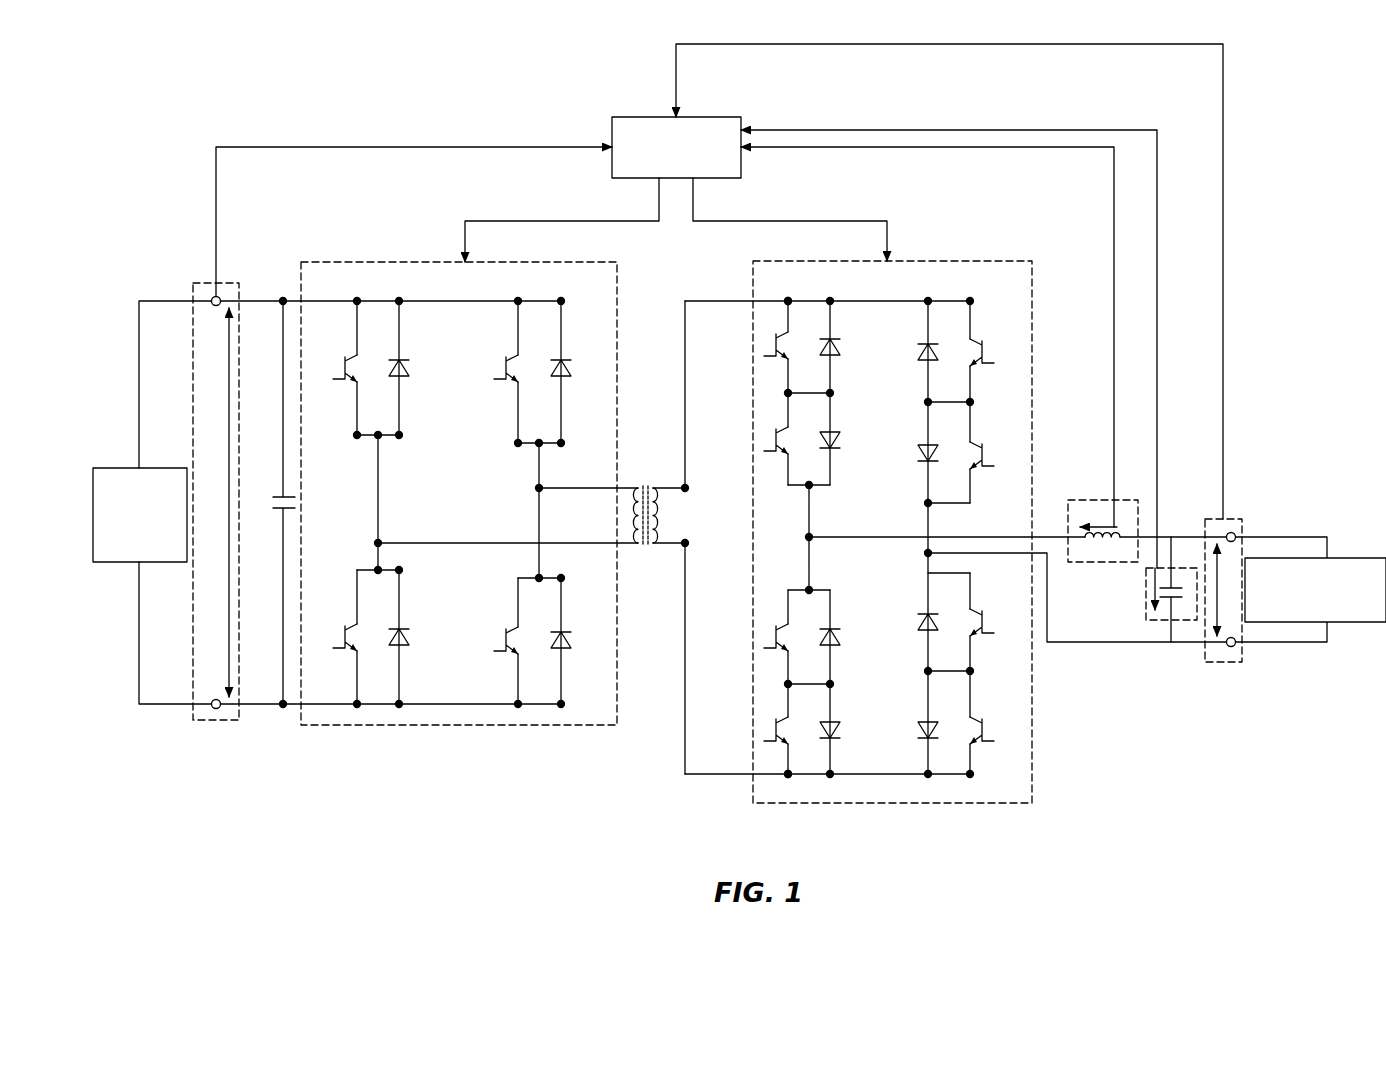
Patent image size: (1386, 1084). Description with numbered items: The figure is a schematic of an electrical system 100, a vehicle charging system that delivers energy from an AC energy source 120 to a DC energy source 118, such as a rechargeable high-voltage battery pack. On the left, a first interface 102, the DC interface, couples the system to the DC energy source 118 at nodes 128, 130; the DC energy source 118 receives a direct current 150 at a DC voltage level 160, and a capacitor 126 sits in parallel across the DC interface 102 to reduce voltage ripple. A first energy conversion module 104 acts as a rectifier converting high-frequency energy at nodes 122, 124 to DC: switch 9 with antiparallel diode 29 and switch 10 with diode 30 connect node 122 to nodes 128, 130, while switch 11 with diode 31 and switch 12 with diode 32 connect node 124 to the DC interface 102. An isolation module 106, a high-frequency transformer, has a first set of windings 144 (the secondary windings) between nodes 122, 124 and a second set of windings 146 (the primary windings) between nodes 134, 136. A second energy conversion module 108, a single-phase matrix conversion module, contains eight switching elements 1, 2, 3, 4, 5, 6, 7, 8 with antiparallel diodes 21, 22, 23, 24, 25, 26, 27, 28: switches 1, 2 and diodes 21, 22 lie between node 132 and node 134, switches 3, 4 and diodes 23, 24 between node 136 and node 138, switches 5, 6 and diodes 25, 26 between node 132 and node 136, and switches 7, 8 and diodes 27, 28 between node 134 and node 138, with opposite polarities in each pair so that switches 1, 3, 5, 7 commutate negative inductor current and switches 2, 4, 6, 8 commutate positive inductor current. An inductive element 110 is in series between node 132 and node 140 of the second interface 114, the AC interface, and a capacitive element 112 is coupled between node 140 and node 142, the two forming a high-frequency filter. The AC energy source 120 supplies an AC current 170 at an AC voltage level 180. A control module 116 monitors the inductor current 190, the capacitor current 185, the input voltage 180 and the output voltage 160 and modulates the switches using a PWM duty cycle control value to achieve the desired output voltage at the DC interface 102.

The electrical system 100 is at (230, 86).
The first interface 102 is at (205, 726).
The first energy conversion module 104 is at (495, 728).
The isolation module 106 is at (646, 537).
The second energy conversion module 108 is at (960, 806).
The inductive element 110 is at (1103, 548).
The capacitive element 112 is at (1183, 582).
The second interface 114 is at (1218, 665).
The control module 116 is at (705, 117).
The DC energy source 118 is at (139, 460).
The AC energy source 120 is at (1365, 556).
The node 122 is at (382, 540).
The node 124 is at (537, 488).
The capacitor 126 is at (297, 503).
The node 128 is at (220, 297).
The node 130 is at (218, 709).
The node 132 is at (813, 534).
The node 134 is at (791, 297).
The node 136 is at (788, 778).
The node 138 is at (924, 556).
The node 140 is at (1233, 532).
The node 142 is at (1236, 646).
The first set of windings 144 is at (630, 532).
The second set of windings 146 is at (662, 535).
The direct current 150 is at (248, 312).
The DC voltage level 160 is at (230, 585).
The AC current 170 is at (1260, 528).
The AC voltage level 180 is at (1216, 622).
The capacitor current 185 is at (1150, 594).
The inductor current 190 is at (1112, 522).
The switching element 1 is at (776, 347).
The switching element 2 is at (784, 439).
The switching element 3 is at (990, 622).
The switching element 4 is at (990, 722).
The switching element 5 is at (784, 729).
The switching element 6 is at (784, 637).
The switching element 7 is at (990, 452).
The switching element 8 is at (990, 351).
The switch 9 is at (342, 368).
The switch 10 is at (337, 637).
The switch 11 is at (497, 372).
The switch 12 is at (496, 641).
The diode 21 is at (844, 347).
The diode 22 is at (844, 439).
The diode 23 is at (913, 622).
The diode 24 is at (913, 722).
The diode 25 is at (844, 729).
The diode 26 is at (844, 637).
The diode 27 is at (913, 452).
The diode 28 is at (914, 351).
The diode 29 is at (411, 368).
The diode 30 is at (411, 637).
The diode 31 is at (573, 372).
The diode 32 is at (573, 641).